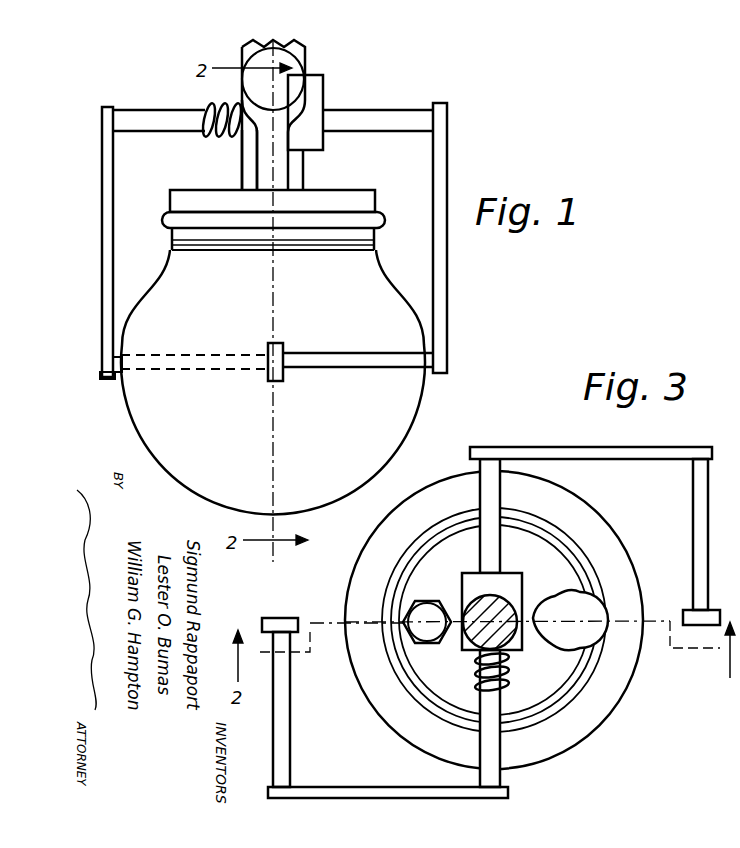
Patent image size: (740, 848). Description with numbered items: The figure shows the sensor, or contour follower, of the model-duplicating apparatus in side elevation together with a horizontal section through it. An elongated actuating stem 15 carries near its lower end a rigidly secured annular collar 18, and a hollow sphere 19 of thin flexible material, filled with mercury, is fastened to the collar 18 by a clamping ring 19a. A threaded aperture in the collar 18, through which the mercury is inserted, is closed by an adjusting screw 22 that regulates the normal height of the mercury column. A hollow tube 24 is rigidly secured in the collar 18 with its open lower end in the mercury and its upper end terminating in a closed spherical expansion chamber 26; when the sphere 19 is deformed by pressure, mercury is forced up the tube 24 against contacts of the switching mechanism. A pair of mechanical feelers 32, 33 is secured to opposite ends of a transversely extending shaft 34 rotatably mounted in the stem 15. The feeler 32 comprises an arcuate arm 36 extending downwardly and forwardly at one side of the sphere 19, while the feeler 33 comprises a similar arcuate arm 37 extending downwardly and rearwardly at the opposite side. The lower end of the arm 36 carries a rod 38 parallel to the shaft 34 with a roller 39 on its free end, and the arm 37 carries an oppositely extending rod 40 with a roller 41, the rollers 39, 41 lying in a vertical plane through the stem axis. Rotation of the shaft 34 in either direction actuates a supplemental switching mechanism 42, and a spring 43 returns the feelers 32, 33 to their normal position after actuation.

In FIG. 1, the actuating stem 15 is at (247, 160).
In FIG. 3, the actuating stem 15 is at (468, 637).
In FIG. 3, the annular collar 18 is at (537, 560).
In FIG. 1, the hollow sphere 19 is at (402, 415).
In FIG. 3, the hollow sphere 19 is at (607, 693).
In FIG. 1, the clamping ring 19a is at (337, 217).
In FIG. 3, the clamping ring 19a is at (448, 523).
In FIG. 3, the adjusting screw 22 is at (420, 612).
In FIG. 1, the hollow tube 24 is at (280, 169).
In FIG. 3, the hollow tube 24 is at (538, 614).
In FIG. 1, the spherical expansion chamber 26 is at (294, 80).
In FIG. 3, the spherical expansion chamber 26 is at (598, 610).
In FIG. 1, the mechanical feeler 32 is at (452, 178).
In FIG. 3, the mechanical feeler 32 is at (573, 437).
In FIG. 1, the mechanical feeler 33 is at (120, 192).
In FIG. 3, the mechanical feeler 33 is at (360, 780).
In FIG. 1, the transversely extending shaft 34 is at (392, 113).
In FIG. 3, the transversely extending shaft 34 is at (493, 498).
In FIG. 1, the arcuate arm 36 is at (442, 275).
In FIG. 3, the arcuate arm 36 is at (648, 448).
In FIG. 1, the arcuate arm 37 is at (113, 267).
In FIG. 3, the arcuate arm 37 is at (315, 787).
In FIG. 1, the rod 38 is at (357, 360).
In FIG. 3, the rod 38 is at (695, 542).
In FIG. 1, the roller 39 is at (270, 377).
In FIG. 3, the roller 39 is at (703, 626).
In FIG. 1, the rod 40 is at (200, 353).
In FIG. 3, the rod 40 is at (283, 713).
In FIG. 3, the roller 41 is at (291, 617).
In FIG. 1, the supplemental switching mechanism 42 is at (330, 105).
In FIG. 3, the supplemental switching mechanism 42 is at (470, 583).
In FIG. 1, the spring 43 is at (207, 108).
In FIG. 3, the spring 43 is at (507, 663).